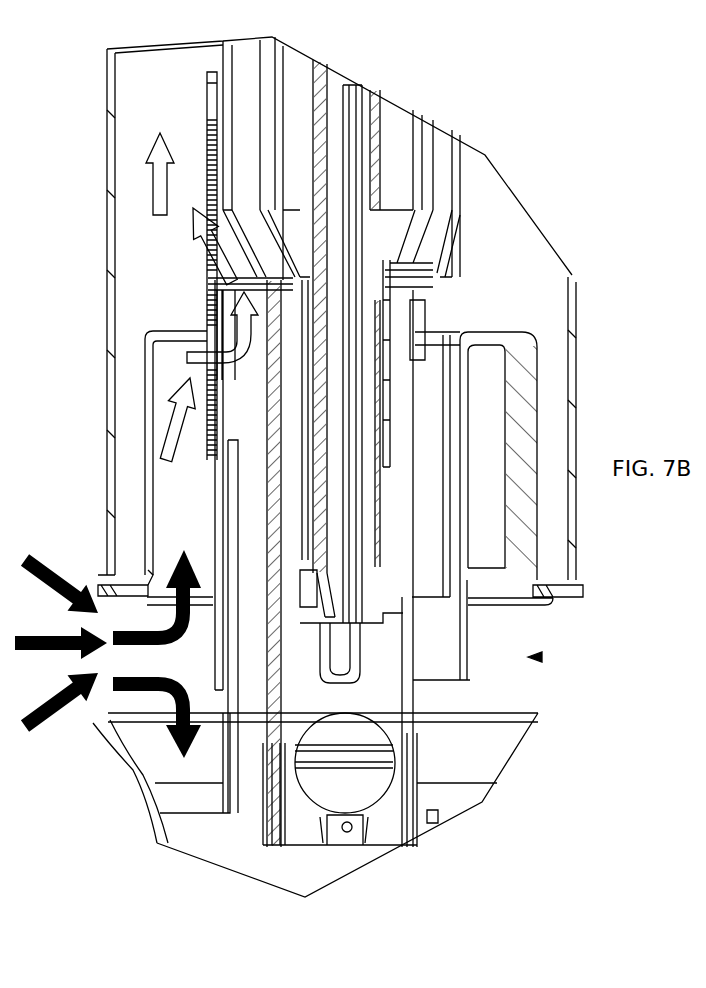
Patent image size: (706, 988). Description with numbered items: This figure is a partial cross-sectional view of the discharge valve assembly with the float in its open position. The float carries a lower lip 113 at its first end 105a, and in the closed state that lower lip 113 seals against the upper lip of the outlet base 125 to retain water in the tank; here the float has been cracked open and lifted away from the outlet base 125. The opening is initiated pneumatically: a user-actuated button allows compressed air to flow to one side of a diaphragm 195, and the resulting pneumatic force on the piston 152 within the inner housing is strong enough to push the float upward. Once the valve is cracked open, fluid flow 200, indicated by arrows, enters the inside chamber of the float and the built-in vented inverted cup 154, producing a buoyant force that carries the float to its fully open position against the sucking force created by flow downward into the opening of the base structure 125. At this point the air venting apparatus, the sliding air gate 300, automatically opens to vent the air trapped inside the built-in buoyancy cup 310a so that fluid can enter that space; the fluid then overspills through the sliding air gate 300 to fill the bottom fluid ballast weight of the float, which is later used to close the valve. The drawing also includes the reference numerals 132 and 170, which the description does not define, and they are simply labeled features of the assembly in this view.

The first end 105a is at (573, 377).
The lower lip 113 is at (583, 587).
The outlet base 125 is at (497, 733).
The airflow direction 132 is at (545, 661).
The piston 152 is at (333, 152).
The vented inverted cup 154 is at (497, 337).
The valve 170 is at (218, 337).
The diaphragm 195 is at (380, 733).
The fluid flow 200 is at (50, 570).
The sliding air gate 300 is at (210, 123).
The built-in buoyancy cup 310a is at (163, 422).